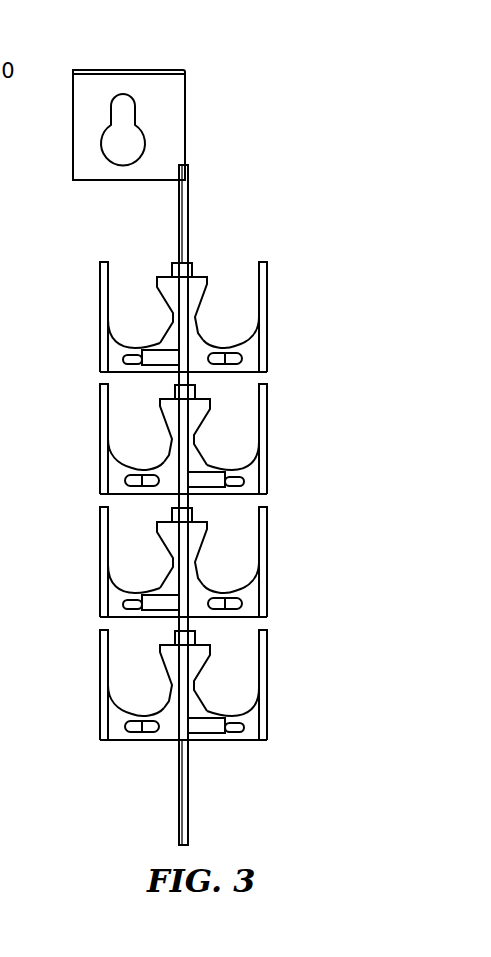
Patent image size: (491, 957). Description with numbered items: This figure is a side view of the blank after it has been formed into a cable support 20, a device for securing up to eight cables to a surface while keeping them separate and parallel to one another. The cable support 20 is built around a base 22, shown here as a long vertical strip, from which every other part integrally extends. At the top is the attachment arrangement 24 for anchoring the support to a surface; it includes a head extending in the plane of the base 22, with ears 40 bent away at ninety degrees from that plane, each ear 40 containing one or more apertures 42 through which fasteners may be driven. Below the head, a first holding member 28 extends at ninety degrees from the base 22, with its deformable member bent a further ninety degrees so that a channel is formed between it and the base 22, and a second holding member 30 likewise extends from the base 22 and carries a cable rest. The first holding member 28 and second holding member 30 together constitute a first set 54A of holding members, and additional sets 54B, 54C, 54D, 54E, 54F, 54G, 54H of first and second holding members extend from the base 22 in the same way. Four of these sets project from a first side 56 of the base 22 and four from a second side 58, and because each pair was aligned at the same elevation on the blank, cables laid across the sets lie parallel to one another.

The cable support 20 is at (298, 262).
The base 22 is at (187, 192).
The attachment arrangement 24 is at (205, 82).
The first holding member 28 is at (268, 290).
The second holding member 30 is at (193, 303).
The ear 40 is at (120, 70).
The aperture 42 is at (135, 135).
The first set of holding members 54A is at (86, 316).
The additional set of holding members 54B is at (93, 446).
The additional set of holding members 54C is at (86, 570).
The additional set of holding members 54D is at (86, 684).
The additional set of holding members 54E is at (274, 320).
The additional set of holding members 54F is at (281, 441).
The additional set of holding members 54G is at (281, 566).
The additional set of holding members 54H is at (281, 678).
The first side of the base 56 is at (175, 230).
The second side of the base 58 is at (192, 219).